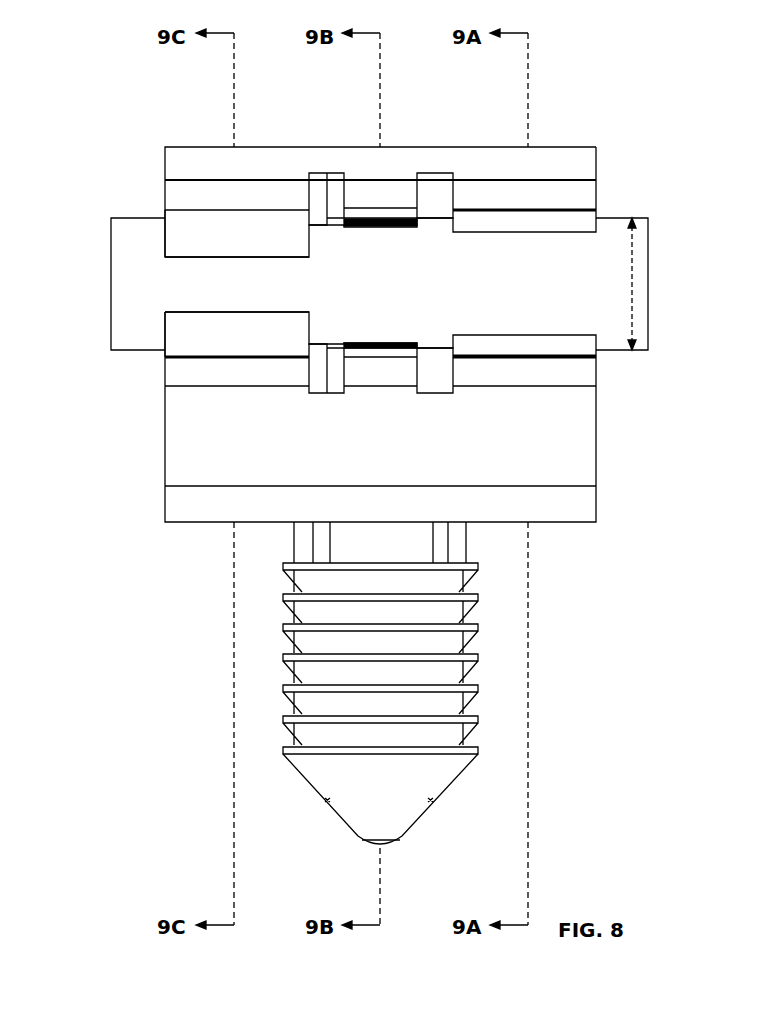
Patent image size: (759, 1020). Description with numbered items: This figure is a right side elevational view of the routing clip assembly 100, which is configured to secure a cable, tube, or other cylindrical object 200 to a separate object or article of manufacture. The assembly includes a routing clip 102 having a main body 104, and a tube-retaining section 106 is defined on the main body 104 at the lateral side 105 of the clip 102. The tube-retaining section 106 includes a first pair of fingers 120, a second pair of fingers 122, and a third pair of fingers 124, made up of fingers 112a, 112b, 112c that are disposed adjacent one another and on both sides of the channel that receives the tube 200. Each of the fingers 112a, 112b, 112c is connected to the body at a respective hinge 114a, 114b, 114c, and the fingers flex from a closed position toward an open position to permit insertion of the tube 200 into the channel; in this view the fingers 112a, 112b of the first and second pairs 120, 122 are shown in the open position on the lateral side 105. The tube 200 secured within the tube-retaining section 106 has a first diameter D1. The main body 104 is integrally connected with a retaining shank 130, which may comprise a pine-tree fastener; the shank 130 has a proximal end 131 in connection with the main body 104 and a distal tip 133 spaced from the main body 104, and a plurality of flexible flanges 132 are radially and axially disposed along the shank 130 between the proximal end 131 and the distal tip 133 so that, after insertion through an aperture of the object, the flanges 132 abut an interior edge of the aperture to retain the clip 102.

The routing clip assembly 100 is at (124, 48).
The routing clip 102 is at (535, 155).
The main body 104 is at (578, 155).
The lateral side 105 is at (585, 462).
The tube-retaining section 106 is at (662, 192).
The fingers 112a is at (555, 220).
The fingers 112b is at (382, 213).
The fingers 112c is at (170, 222).
The hinges 114a is at (507, 198).
The hinges 114b is at (362, 192).
The hinges 114c is at (258, 193).
The first pair of fingers 120 is at (580, 223).
The second pair of fingers 122 is at (410, 218).
The third pair of fingers 124 is at (203, 230).
The retaining shank 130 is at (478, 628).
The proximal end 131 is at (455, 542).
The flexible flanges 132 is at (478, 660).
The distal tip 133 is at (385, 848).
The tube 200 is at (167, 289).
The first diameter D1 is at (632, 272).